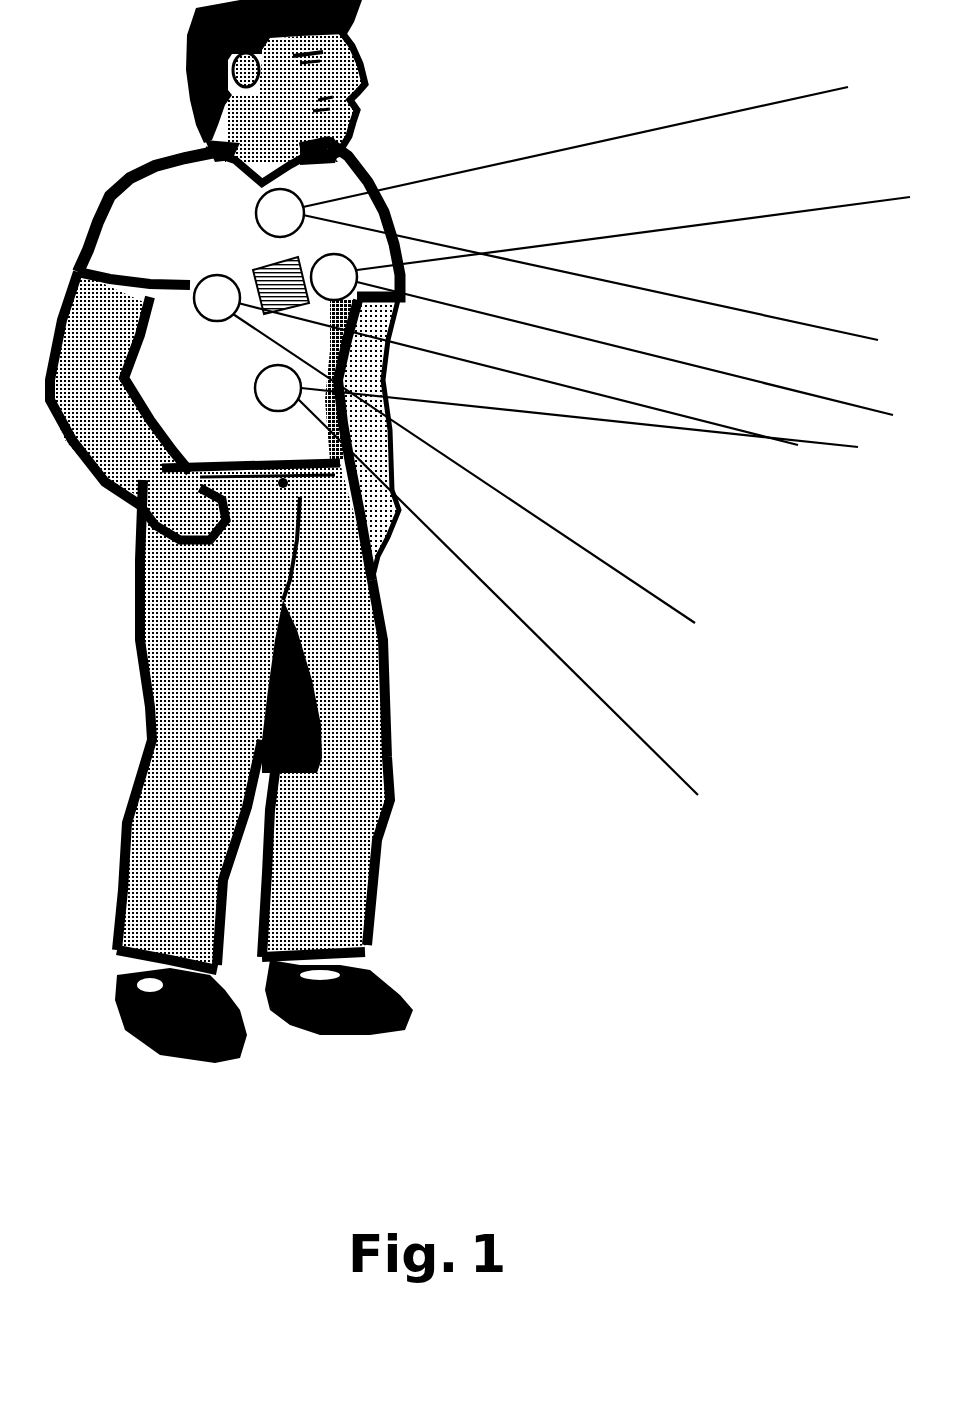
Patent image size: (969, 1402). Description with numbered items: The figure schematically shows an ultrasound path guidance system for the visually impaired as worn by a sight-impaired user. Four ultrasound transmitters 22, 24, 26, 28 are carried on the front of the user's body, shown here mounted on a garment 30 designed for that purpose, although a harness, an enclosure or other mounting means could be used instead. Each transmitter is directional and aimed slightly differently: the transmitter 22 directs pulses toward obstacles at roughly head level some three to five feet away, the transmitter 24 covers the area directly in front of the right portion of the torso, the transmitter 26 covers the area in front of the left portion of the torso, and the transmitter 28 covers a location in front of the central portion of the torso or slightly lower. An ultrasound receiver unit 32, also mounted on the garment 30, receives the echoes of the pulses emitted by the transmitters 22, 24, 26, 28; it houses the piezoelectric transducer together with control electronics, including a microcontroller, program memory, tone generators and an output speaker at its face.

The ultrasound transmitter 22 is at (256, 204).
The ultrasound transmitter 24 is at (197, 281).
The ultrasound transmitter 26 is at (352, 254).
The ultrasound transmitter 28 is at (260, 371).
The garment 30 is at (143, 163).
The ultrasound receiver unit 32 is at (257, 269).